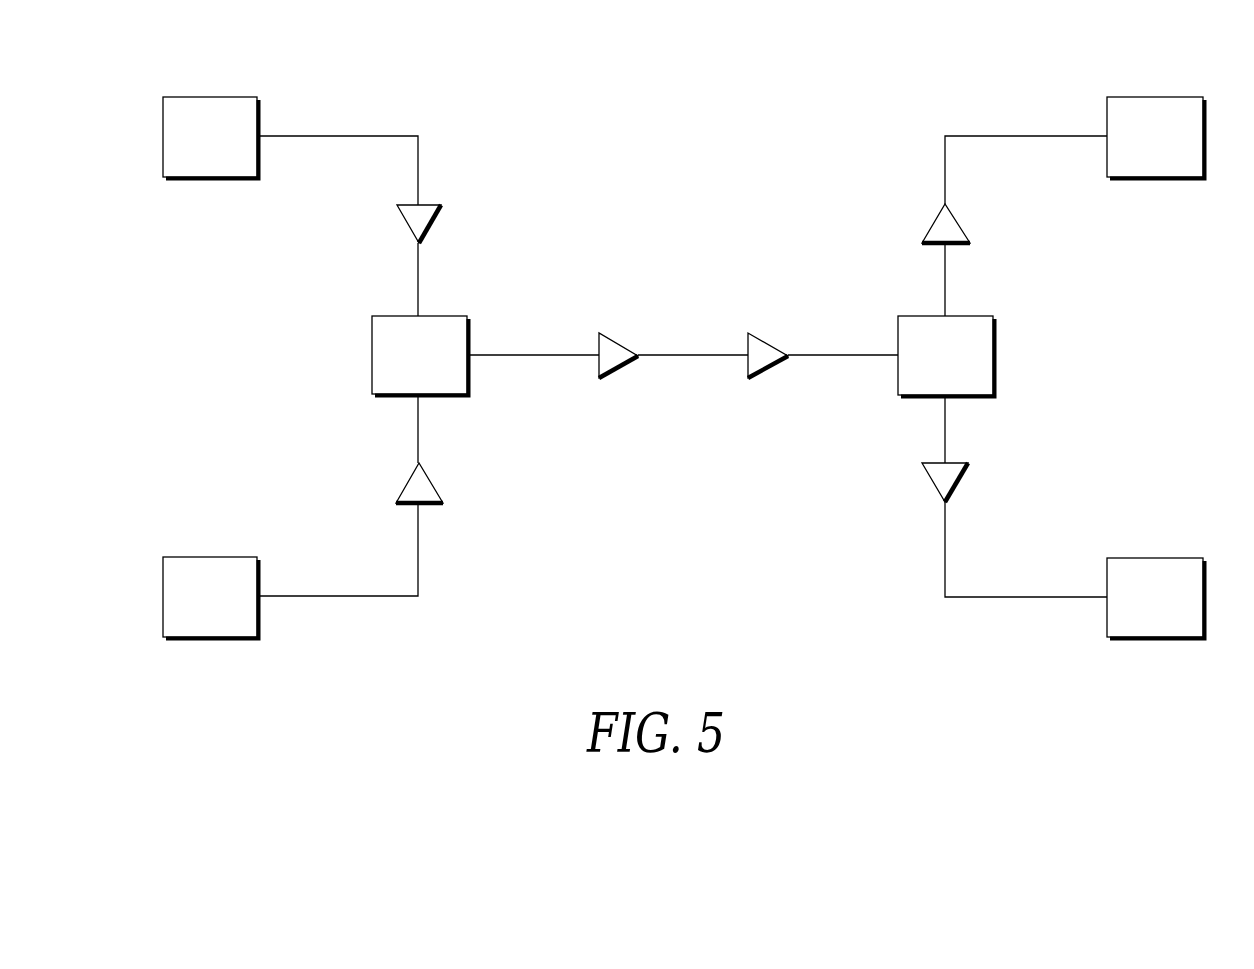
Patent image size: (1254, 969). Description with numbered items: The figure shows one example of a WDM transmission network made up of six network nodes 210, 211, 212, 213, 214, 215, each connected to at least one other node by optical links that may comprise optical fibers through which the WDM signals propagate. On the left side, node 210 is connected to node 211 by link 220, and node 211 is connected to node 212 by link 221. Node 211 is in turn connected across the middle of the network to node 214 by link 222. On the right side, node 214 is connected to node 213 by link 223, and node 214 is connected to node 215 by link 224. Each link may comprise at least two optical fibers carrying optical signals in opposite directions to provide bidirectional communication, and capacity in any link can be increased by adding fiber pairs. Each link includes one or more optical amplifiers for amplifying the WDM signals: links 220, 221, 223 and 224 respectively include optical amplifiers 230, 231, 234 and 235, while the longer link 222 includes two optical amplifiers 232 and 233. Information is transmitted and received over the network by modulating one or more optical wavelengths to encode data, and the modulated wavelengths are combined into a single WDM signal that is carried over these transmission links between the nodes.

The network node 210 is at (247, 97).
The network node 211 is at (455, 316).
The network node 212 is at (247, 557).
The network node 213 is at (1186, 97).
The network node 214 is at (986, 316).
The network node 215 is at (1186, 558).
The optical link 220 is at (418, 160).
The optical link 221 is at (418, 572).
The optical link 222 is at (503, 359).
The optical link 223 is at (945, 160).
The optical link 224 is at (945, 572).
The optical amplifier 230 is at (434, 222).
The optical amplifier 231 is at (436, 481).
The optical amplifier 232 is at (621, 369).
The optical amplifier 233 is at (771, 369).
The optical amplifier 234 is at (956, 223).
The optical amplifier 235 is at (962, 484).